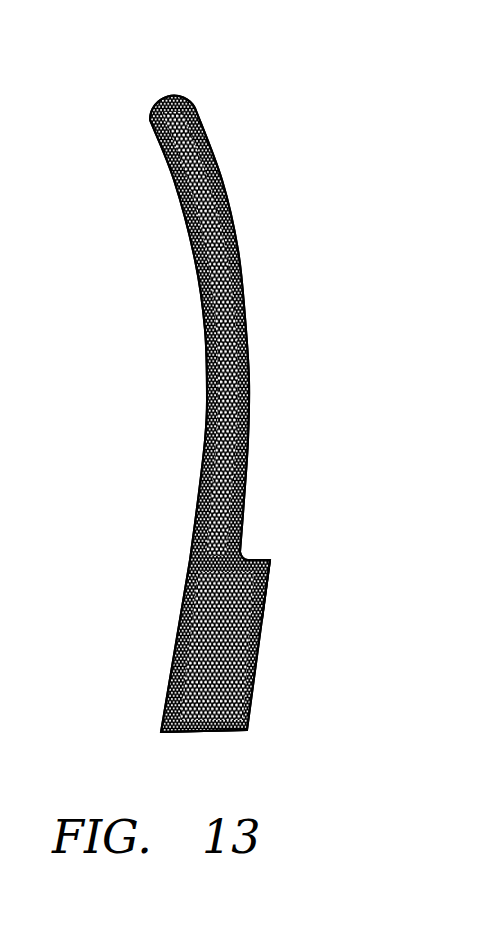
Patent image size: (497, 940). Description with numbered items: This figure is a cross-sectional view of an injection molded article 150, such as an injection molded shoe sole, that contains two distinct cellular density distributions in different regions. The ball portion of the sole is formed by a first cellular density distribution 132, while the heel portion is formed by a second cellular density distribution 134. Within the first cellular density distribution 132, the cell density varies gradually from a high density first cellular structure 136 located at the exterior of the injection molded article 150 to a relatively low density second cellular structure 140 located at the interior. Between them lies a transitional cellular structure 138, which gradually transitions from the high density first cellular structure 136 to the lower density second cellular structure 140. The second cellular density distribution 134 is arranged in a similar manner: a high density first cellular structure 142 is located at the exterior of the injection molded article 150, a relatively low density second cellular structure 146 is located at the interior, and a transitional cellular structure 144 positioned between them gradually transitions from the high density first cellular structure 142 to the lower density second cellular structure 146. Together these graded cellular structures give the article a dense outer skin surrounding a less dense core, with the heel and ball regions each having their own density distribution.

The first cellular density distribution 132 is at (212, 153).
The second cellular density distribution 134 is at (176, 654).
The first cellular structure 136 is at (227, 208).
The transitional cellular structure 138 is at (238, 265).
The second cellular structure 140 is at (245, 317).
The first cellular structure 142 is at (270, 590).
The transitional cellular structure 144 is at (257, 643).
The second cellular structure 146 is at (253, 682).
The injection molded article 150 is at (155, 400).